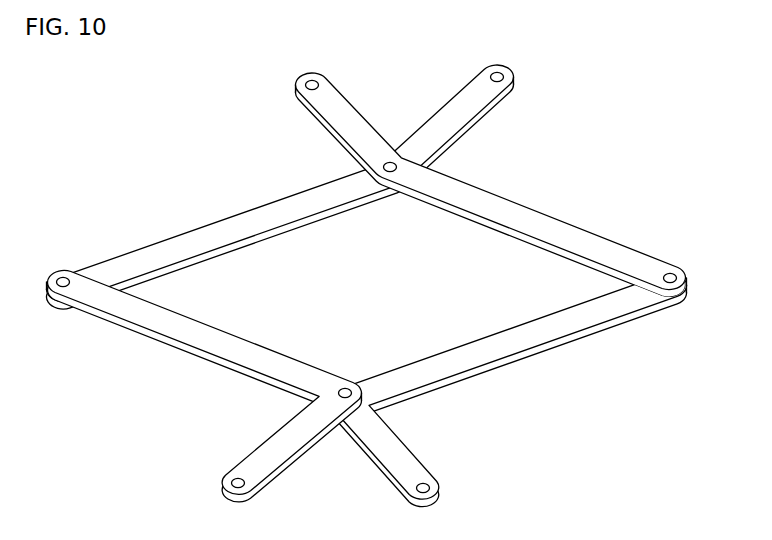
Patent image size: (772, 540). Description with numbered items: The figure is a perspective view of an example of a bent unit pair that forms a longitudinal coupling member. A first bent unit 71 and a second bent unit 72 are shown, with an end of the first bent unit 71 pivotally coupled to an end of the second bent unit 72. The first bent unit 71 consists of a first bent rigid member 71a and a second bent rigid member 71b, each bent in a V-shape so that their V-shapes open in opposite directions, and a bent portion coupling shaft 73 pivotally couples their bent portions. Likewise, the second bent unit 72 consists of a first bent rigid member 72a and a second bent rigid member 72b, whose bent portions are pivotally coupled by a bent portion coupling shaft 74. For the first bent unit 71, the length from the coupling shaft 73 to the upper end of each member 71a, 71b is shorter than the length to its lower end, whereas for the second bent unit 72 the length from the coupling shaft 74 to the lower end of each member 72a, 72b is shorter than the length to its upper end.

The first bent unit 71 is at (367, 187).
The first bent rigid member 71a is at (565, 235).
The second bent rigid member 71b is at (163, 250).
The second bent unit 72 is at (367, 388).
The first bent rigid member 72a is at (523, 342).
The second bent rigid member 72b is at (163, 318).
The bent portion coupling shaft 73 is at (390, 160).
The bent portion coupling shaft 74 is at (347, 402).